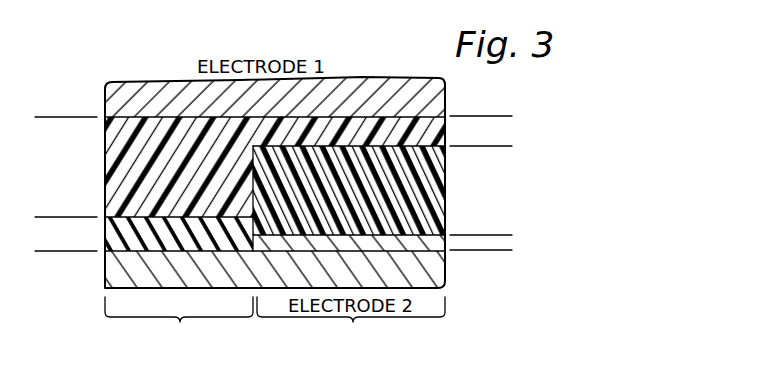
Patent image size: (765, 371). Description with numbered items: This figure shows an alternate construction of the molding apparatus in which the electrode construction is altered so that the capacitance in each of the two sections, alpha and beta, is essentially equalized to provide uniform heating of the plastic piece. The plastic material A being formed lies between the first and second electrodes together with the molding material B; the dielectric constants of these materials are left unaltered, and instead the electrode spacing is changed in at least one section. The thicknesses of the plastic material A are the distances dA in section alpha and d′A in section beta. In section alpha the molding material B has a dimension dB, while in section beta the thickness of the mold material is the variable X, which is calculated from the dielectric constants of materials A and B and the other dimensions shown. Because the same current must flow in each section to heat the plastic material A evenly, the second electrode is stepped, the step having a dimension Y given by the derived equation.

The plastic material A is at (148, 125).
The molding material B is at (138, 236).
The thickness of plastic material in section alpha dA is at (47, 217).
The thickness of molding material in section alpha dB is at (47, 217).
The thickness of plastic material in section beta d′A is at (502, 116).
The thickness of mold material in section beta X is at (502, 235).
The step dimension in electrode Y is at (502, 235).